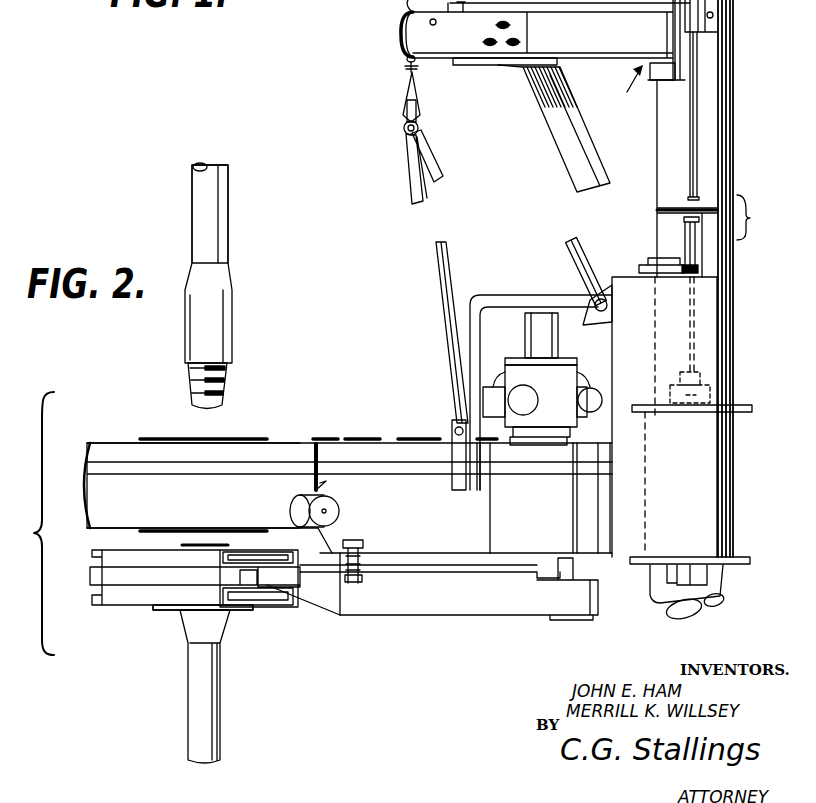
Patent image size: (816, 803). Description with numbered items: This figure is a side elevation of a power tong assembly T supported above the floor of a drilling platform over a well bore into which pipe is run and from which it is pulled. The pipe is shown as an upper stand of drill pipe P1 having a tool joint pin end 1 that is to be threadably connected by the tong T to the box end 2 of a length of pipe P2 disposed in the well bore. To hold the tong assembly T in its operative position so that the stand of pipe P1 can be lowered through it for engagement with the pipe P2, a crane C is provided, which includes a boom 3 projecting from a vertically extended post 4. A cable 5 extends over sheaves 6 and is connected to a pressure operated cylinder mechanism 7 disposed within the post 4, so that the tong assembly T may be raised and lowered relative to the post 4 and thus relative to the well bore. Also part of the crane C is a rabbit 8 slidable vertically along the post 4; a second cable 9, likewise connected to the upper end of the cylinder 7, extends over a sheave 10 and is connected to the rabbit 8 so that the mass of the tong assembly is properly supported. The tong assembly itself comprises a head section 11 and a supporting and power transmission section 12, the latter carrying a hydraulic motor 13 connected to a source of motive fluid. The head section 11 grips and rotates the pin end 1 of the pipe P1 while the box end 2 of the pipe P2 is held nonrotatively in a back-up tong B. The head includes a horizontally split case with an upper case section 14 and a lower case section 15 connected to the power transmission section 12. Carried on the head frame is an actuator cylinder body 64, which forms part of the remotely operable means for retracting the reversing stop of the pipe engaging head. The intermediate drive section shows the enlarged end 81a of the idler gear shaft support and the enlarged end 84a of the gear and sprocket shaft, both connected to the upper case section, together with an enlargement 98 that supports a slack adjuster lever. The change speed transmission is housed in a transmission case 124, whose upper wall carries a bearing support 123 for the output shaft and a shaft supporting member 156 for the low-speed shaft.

The tool joint pin end 1 is at (232, 328).
The box end 2 is at (168, 623).
The boom 3 is at (580, 56).
The post 4 is at (735, 91).
The cable 5 is at (408, 60).
The sheaves 6 is at (402, 30).
The pressure operated cylinder mechanism 7 is at (652, 617).
The rabbit 8 is at (745, 469).
The second cable 9 is at (698, 145).
The sheave 10 is at (694, 20).
The head section 11 is at (115, 434).
The supporting and power transmission section 12 is at (598, 560).
The hydraulic motor 13 is at (515, 358).
The upper case section 14 is at (92, 448).
The lower case section 15 is at (93, 503).
The actuator cylinder body 64 is at (327, 512).
The enlarged end of shaft support 81a is at (362, 438).
The enlarged end of shaft 84a is at (432, 440).
The enlargement 98 is at (490, 443).
The bearing support 123 is at (662, 258).
The transmission case 124 is at (702, 325).
The shaft supporting member 156 is at (645, 270).
The back-up tong B is at (120, 607).
The crane C is at (627, 92).
The tong assembly T is at (405, 428).
The upper stand of pipe P1 is at (230, 205).
The pipe in well bore P2 is at (222, 692).